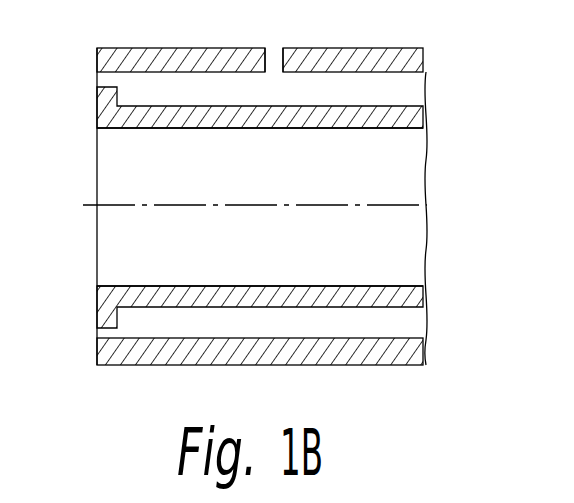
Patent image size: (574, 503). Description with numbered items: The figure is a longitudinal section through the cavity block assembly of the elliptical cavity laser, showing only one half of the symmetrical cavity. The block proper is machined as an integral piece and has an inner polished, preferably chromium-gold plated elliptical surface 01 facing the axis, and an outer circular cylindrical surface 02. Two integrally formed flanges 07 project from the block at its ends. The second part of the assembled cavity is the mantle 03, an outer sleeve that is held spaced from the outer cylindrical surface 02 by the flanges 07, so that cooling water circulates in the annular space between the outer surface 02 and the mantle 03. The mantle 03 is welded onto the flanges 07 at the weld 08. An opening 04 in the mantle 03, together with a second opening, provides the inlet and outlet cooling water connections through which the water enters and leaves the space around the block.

The elliptical surface 01 is at (313, 128).
The outer circular cylindrical surface 02 is at (313, 107).
The mantle 03 is at (373, 48).
The opening for inlet cooling water connection 04 is at (284, 38).
The flange 07 is at (97, 107).
The weld 08 is at (97, 77).